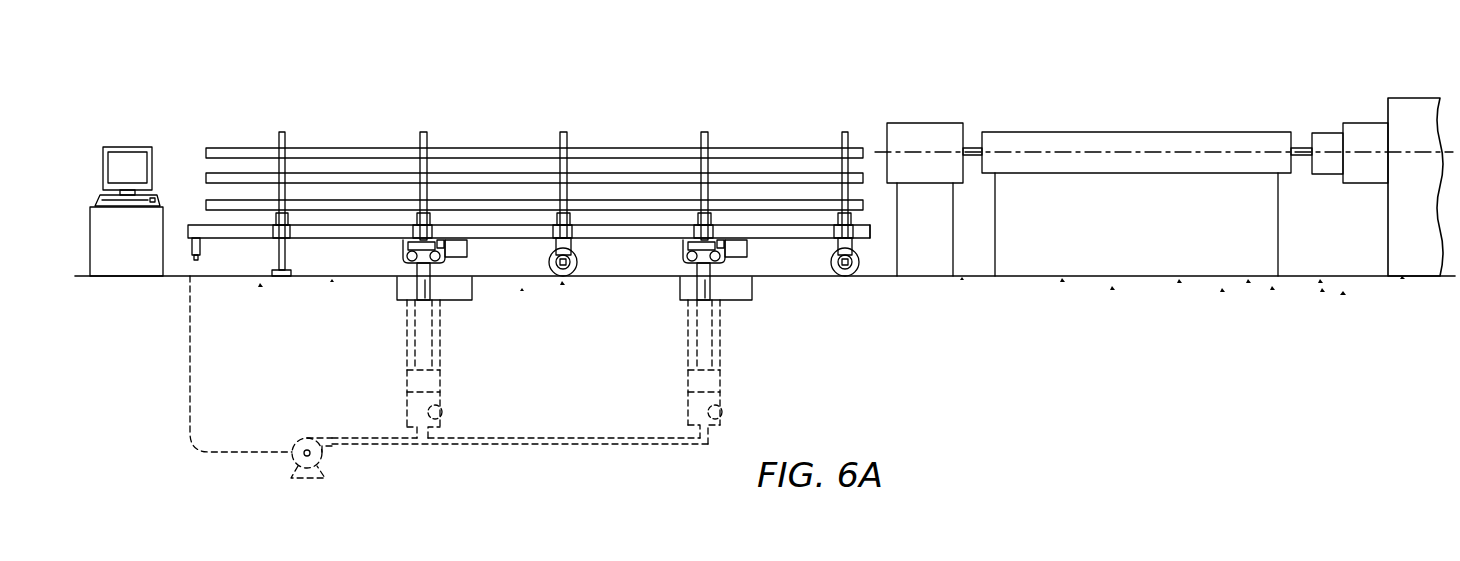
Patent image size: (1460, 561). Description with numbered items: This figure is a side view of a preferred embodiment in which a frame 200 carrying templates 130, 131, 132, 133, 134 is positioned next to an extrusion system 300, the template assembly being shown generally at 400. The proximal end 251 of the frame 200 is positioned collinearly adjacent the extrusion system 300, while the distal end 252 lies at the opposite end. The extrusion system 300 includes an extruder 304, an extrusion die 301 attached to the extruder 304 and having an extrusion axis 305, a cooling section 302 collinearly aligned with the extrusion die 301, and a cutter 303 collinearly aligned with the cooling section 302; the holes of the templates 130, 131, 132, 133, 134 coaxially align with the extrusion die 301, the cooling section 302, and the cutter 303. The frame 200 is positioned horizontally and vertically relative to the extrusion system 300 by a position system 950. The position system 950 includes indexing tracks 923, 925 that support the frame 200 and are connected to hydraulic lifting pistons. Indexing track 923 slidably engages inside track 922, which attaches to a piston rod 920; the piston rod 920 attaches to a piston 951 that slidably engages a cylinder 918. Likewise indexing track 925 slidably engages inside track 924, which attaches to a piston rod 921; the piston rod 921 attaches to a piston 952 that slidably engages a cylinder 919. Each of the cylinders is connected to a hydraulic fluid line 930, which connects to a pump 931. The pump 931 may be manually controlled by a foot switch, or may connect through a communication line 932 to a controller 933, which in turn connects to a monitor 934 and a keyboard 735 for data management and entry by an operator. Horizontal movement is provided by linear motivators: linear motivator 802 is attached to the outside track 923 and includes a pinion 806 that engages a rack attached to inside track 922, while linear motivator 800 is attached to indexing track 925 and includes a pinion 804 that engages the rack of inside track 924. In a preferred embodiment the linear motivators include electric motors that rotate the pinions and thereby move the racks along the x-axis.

The template 130 is at (278, 137).
The template 131 is at (420, 140).
The template 132 is at (563, 137).
The template 133 is at (701, 140).
The template 134 is at (843, 137).
The frame 200 is at (248, 250).
The proximal end 251 is at (876, 240).
The distal end 252 is at (190, 225).
The extrusion system 300 is at (882, 76).
The extrusion die 301 is at (1355, 123).
The cooling section 302 is at (1128, 132).
The cutter 303 is at (925, 122).
The extruder 304 is at (1416, 98).
The extrusion axis 305 is at (1068, 150).
The rail assembly 400 is at (333, 104).
The keyboard 735 is at (160, 197).
The linear motivator 800 is at (747, 243).
The linear motivator 802 is at (467, 243).
The pinion 804 is at (720, 242).
The pinion 806 is at (440, 242).
The cylinder 918 is at (442, 412).
The cylinder 919 is at (722, 412).
The piston rod 920 is at (431, 282).
The piston rod 921 is at (711, 282).
The inside track 922 is at (418, 282).
The indexing track 923 is at (402, 243).
The inside track 924 is at (698, 282).
The indexing track 925 is at (682, 243).
The hydraulic fluid line 930 is at (533, 446).
The pump 931 is at (302, 480).
The communication line 932 is at (188, 390).
The controller 933 is at (133, 266).
The monitor 934 is at (120, 147).
The position system 950 is at (790, 366).
The piston 951 is at (407, 381).
The piston 952 is at (688, 381).